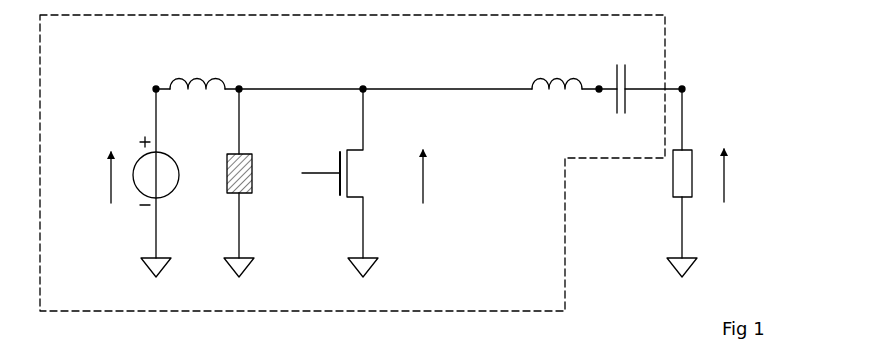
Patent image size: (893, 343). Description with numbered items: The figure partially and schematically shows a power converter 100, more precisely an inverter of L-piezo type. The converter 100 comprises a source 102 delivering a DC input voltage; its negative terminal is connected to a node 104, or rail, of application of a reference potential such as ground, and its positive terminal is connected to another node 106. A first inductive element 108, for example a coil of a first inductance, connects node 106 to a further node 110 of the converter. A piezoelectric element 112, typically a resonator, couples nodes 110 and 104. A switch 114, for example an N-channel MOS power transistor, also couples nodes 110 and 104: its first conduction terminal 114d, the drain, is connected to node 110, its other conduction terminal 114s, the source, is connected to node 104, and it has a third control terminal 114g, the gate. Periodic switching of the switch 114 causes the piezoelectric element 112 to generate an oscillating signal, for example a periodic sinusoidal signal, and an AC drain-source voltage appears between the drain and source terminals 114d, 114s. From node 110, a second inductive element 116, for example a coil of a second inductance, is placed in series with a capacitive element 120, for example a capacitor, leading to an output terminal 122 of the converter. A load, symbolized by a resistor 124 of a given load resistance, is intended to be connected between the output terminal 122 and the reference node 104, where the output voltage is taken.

The power converter 100 is at (665, 35).
The source 102 is at (124, 137).
The node 104 is at (160, 272).
The node 106 is at (155, 89).
The first inductive element 108 is at (220, 82).
The node 110 is at (241, 88).
The piezoelectric element 112 is at (257, 154).
The switch 114 is at (360, 166).
The first conduction terminal 114d is at (361, 130).
The third control terminal 114g is at (302, 173).
The conduction terminal 114s is at (362, 230).
The second inductive element 116 is at (532, 87).
The capacitive element 120 is at (620, 60).
The output terminal 122 is at (684, 90).
The resistor 124 is at (673, 190).